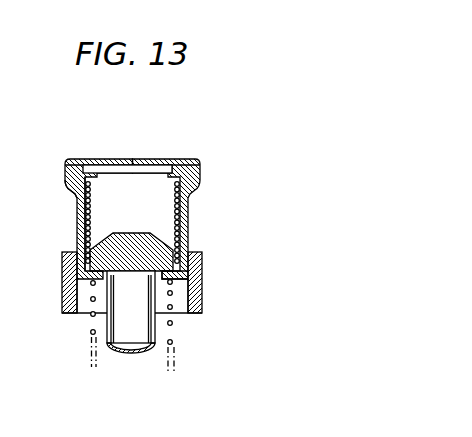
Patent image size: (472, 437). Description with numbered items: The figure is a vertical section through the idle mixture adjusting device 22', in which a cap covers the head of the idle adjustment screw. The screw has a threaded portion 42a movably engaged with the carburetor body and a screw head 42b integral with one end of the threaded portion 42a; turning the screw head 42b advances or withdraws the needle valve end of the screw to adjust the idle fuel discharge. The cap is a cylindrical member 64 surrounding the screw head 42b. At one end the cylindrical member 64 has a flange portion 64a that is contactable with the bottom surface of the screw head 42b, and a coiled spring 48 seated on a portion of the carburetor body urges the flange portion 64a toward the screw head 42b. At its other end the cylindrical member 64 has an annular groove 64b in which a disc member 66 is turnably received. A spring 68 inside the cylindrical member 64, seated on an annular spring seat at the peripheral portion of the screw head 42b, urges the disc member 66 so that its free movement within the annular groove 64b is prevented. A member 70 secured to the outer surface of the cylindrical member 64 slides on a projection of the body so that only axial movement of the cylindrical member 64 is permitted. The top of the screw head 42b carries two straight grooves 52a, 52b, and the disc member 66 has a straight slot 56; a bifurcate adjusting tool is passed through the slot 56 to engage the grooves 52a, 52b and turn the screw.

The idle mixture adjusting device 22' is at (135, 257).
The slot 56 is at (118, 170).
The disc member 66 is at (168, 168).
The cylindrical member 64 is at (188, 206).
The flange portion 64a is at (184, 283).
The annular groove 64b is at (70, 185).
The spring 68 is at (89, 211).
The straight groove 52a is at (89, 236).
The straight groove 52b is at (178, 238).
The threaded portion 42a is at (128, 343).
The screw head 42b is at (133, 244).
The coiled spring 48 is at (80, 298).
The member for preventing turning movement 70 is at (200, 306).